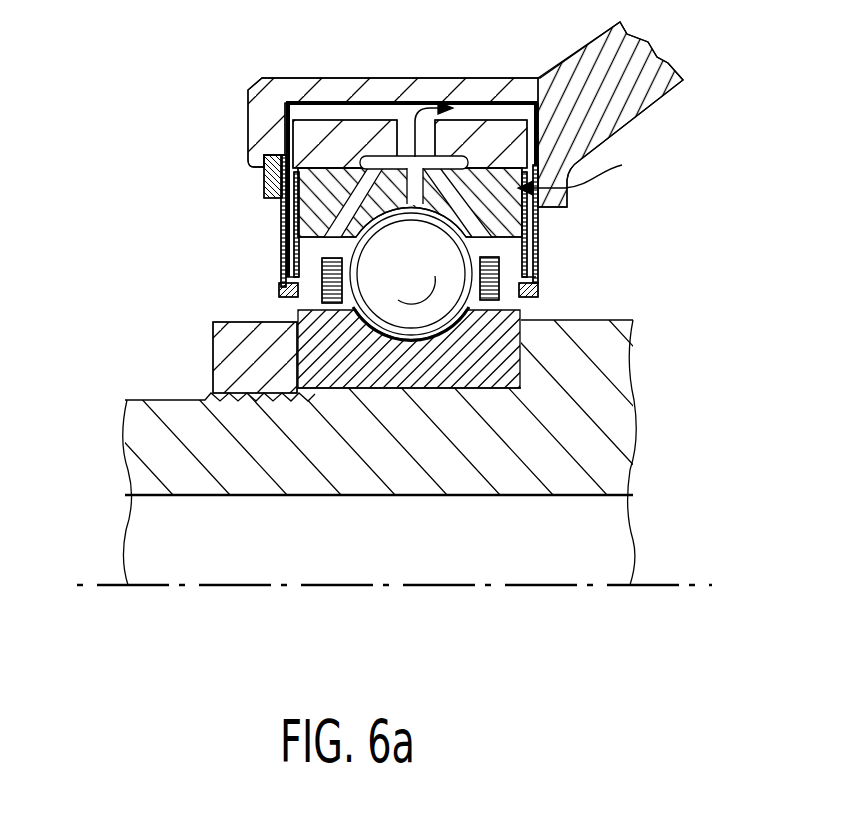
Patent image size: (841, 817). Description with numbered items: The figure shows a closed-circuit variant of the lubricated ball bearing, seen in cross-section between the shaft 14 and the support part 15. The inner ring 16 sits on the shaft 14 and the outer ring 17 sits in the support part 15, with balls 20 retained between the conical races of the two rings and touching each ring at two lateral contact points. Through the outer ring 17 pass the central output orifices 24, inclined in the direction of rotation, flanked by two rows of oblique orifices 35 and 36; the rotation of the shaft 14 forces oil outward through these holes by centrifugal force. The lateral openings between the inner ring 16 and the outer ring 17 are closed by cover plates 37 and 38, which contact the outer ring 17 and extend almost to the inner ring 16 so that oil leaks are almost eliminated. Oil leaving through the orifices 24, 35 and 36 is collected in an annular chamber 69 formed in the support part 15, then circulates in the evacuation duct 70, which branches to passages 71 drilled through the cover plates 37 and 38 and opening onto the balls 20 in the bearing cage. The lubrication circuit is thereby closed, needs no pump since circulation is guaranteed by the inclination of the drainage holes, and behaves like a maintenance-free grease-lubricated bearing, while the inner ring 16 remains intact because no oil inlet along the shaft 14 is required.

The shaft 14 is at (150, 450).
The support part 15 is at (270, 108).
The inner ring 16 is at (528, 367).
The outer ring 17 is at (588, 155).
The balls 20 is at (392, 268).
The orifices 24 is at (377, 166).
The oblique orifices 35 is at (282, 255).
The oblique orifices 36 is at (540, 244).
The cover plate 37 is at (282, 292).
The cover plate 38 is at (538, 293).
The annular chamber 69 is at (364, 156).
The evacuation duct 70 is at (403, 124).
The passages 71 is at (292, 257).